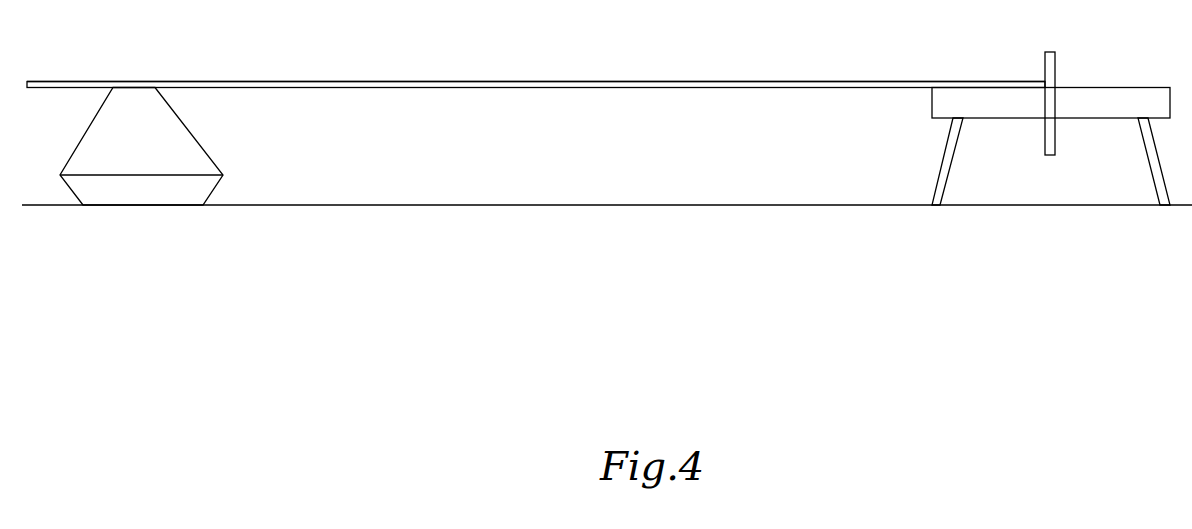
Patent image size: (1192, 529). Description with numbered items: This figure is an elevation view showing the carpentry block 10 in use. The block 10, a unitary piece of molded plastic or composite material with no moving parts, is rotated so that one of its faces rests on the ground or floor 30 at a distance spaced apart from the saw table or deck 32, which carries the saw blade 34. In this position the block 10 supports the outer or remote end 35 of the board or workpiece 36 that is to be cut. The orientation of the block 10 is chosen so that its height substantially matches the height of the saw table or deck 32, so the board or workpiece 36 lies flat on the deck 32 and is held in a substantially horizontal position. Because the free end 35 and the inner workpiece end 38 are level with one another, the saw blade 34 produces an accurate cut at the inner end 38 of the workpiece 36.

The carpentry block 10 is at (177, 135).
The ground or floor 30 is at (373, 205).
The saw table or deck 32 is at (1130, 87).
The saw blade 34 is at (1052, 52).
The outer or remote end of the board 35 is at (65, 81).
The board or workpiece 36 is at (538, 81).
The inner workpiece end 38 is at (1010, 80).